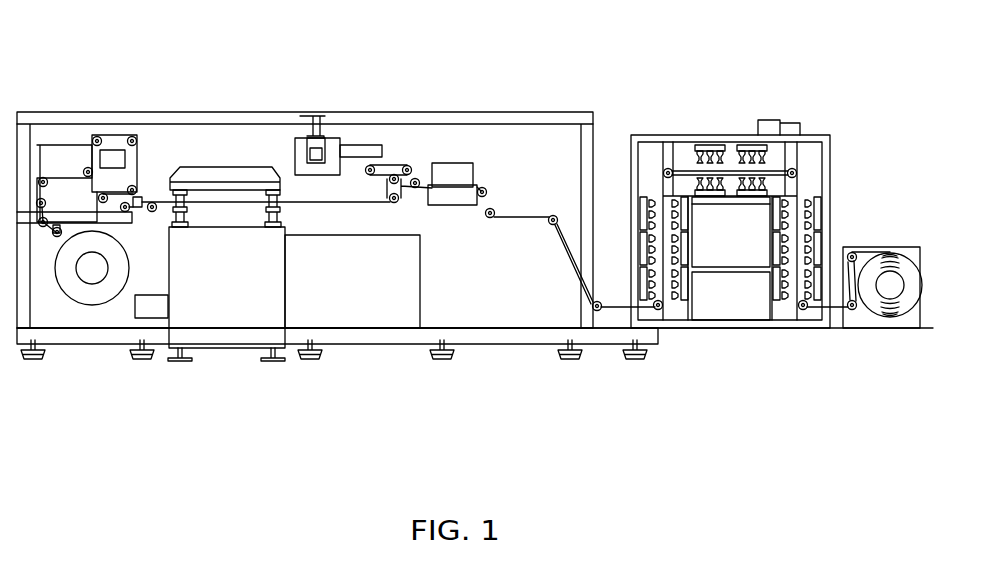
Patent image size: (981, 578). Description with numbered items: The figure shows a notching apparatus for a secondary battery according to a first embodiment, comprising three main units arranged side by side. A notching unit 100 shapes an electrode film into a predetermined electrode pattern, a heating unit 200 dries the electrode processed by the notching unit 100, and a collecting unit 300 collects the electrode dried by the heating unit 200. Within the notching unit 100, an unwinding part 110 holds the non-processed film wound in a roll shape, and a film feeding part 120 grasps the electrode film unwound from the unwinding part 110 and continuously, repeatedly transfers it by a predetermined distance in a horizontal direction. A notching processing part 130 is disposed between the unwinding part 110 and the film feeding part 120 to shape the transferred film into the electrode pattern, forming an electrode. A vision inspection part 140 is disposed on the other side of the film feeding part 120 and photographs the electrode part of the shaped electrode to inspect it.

The notching unit 100 is at (277, 95).
The unwinding part 110 is at (88, 262).
The film feeding part 120 is at (132, 136).
The notching processing part 130 is at (225, 167).
The vision inspection part 140 is at (333, 138).
The heating unit 200 is at (721, 118).
The collecting unit 300 is at (874, 234).